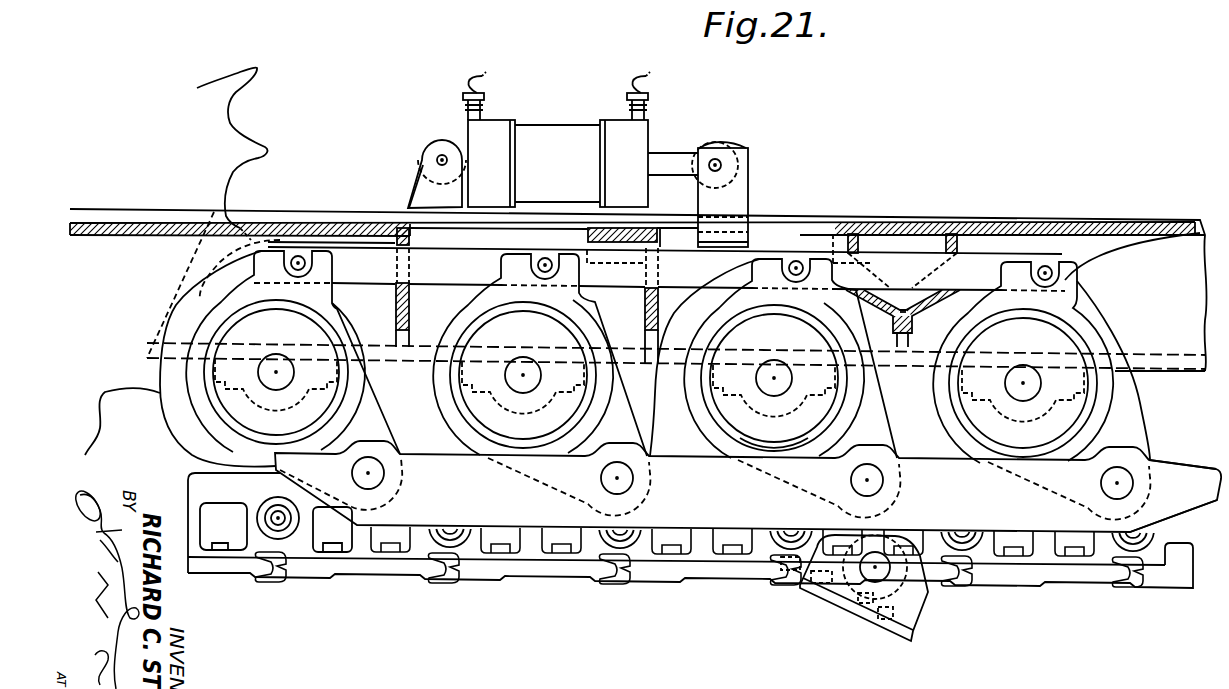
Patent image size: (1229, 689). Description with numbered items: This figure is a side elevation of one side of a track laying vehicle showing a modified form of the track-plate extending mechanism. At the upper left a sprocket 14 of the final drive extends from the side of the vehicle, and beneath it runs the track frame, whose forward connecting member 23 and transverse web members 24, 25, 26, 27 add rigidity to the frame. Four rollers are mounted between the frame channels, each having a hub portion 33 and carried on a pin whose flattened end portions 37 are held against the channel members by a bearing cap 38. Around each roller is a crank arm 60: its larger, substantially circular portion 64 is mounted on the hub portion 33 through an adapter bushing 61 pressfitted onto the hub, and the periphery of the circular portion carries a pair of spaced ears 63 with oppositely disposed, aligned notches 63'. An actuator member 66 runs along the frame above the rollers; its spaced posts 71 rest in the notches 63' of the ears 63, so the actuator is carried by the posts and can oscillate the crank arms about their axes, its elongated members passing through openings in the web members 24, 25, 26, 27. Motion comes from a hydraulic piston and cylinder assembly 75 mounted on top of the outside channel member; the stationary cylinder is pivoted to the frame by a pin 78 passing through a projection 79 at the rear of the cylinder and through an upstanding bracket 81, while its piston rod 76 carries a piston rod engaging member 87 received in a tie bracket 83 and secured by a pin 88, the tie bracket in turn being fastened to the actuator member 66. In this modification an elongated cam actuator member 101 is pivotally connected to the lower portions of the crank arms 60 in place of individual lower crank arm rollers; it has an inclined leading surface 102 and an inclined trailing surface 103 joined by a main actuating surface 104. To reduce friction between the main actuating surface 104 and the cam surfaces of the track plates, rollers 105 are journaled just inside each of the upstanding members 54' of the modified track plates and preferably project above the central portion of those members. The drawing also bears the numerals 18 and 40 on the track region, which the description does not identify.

The sprocket 14 is at (253, 132).
The endless track 18 is at (272, 586).
The connecting member 23 is at (1037, 228).
The transverse web member 24 is at (410, 300).
The transverse web member 25 is at (665, 297).
The transverse web member 26 is at (900, 320).
The transverse web member 27 is at (910, 325).
The hub portion 33 is at (810, 413).
The flattened end portions 37 is at (276, 360).
The bearing cap 38 is at (245, 393).
The track shoe 40 is at (417, 556).
The upstanding members 54' is at (846, 588).
The crank arms 60 is at (338, 442).
The adapter bushing 61 is at (767, 443).
The ears 63 is at (617, 359).
The notches 63' is at (659, 247).
The circular portion 64 is at (230, 312).
The actuator member 66 is at (368, 258).
The posts 71 is at (308, 253).
The hydraulic piston and cylinder assembly 75 is at (578, 124).
The piston rod 76 is at (675, 156).
The pin 78 is at (440, 158).
The projection 79 is at (448, 138).
The upstanding bracket 81 is at (427, 185).
The tie bracket 83 is at (752, 236).
The piston rod engaging member 87 is at (722, 150).
The pin 88 is at (722, 166).
The cam actuator member 101 is at (1160, 480).
The inclined leading surface 102 is at (1204, 506).
The inclined trailing surface 103 is at (330, 513).
The main actuating surface 104 is at (580, 532).
The rollers 105 is at (930, 568).